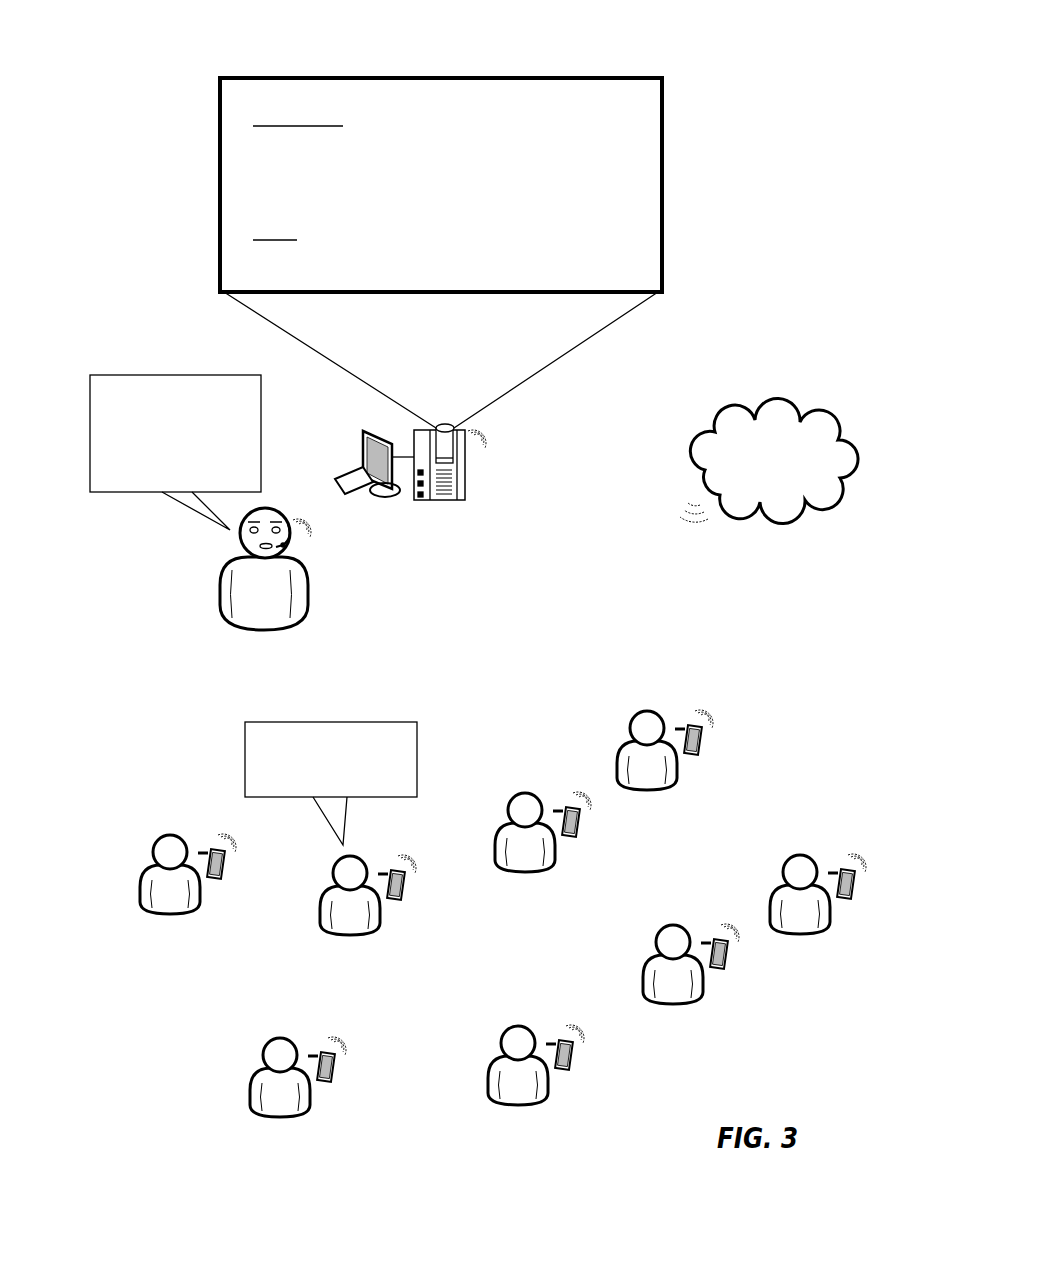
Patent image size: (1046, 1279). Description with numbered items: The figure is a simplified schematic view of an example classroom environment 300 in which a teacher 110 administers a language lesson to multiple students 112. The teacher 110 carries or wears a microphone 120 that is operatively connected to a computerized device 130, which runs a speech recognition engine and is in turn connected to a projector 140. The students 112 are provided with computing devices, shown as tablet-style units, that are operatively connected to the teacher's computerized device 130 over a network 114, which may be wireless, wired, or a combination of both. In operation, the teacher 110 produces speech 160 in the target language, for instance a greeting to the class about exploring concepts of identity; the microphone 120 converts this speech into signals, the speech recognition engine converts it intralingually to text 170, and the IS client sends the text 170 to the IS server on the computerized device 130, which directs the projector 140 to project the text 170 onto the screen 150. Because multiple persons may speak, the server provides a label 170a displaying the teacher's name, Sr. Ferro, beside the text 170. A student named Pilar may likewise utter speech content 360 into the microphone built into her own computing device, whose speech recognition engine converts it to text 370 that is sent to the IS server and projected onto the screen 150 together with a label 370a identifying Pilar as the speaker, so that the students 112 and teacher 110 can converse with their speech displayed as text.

The classroom environment 300 is at (792, 110).
The screen 150 is at (220, 170).
The text 170 is at (644, 139).
The label 170a is at (248, 114).
The text 370 is at (644, 245).
The label 370a is at (248, 228).
The projector 140 is at (466, 479).
The computerized device 130 is at (385, 490).
The network 114 is at (759, 481).
The speech 160 is at (108, 442).
The teacher 110 is at (221, 592).
The microphone 120 is at (292, 540).
The student speech 360 is at (260, 757).
The students 112 is at (180, 988).